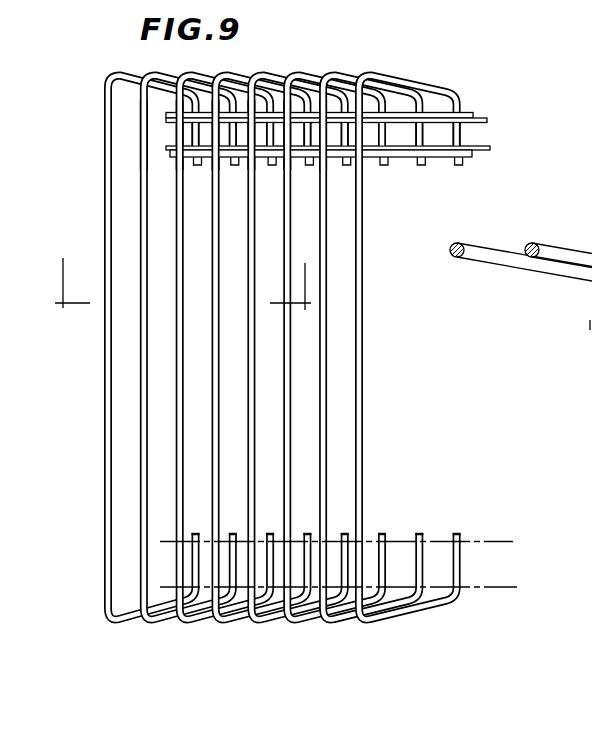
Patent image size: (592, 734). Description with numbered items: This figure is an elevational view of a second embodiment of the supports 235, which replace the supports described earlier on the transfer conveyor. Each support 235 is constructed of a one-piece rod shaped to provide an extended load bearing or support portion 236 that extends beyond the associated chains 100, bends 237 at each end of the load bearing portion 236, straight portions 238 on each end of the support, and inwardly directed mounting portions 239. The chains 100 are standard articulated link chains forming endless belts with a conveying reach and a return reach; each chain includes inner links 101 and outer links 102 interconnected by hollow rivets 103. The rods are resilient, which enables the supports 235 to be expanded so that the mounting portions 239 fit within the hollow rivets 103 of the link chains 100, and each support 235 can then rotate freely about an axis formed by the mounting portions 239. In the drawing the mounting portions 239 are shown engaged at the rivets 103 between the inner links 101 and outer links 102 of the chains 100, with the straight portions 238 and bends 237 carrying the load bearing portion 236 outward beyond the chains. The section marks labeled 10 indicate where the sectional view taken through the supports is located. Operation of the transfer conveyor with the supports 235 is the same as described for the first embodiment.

The chains 100 is at (361, 135).
The inner links 101 is at (488, 122).
The outer links 102 is at (490, 152).
The hollow rivets 103 is at (420, 138).
The supports 235 is at (242, 320).
The load bearing portion 236 is at (104, 363).
The bends 237 is at (364, 71).
The straight portions 238 is at (421, 87).
The mounting portions 239 is at (458, 166).
The section line for FIG. 10 is at (187, 297).